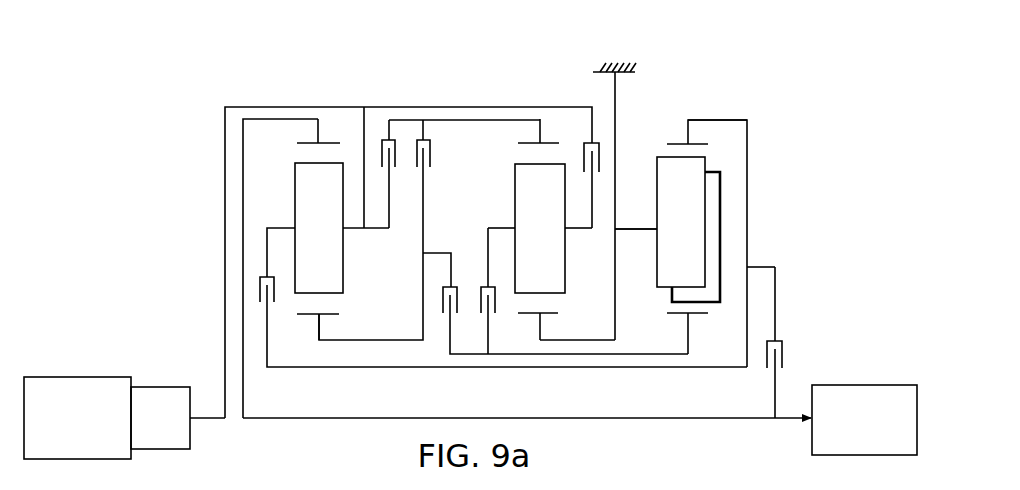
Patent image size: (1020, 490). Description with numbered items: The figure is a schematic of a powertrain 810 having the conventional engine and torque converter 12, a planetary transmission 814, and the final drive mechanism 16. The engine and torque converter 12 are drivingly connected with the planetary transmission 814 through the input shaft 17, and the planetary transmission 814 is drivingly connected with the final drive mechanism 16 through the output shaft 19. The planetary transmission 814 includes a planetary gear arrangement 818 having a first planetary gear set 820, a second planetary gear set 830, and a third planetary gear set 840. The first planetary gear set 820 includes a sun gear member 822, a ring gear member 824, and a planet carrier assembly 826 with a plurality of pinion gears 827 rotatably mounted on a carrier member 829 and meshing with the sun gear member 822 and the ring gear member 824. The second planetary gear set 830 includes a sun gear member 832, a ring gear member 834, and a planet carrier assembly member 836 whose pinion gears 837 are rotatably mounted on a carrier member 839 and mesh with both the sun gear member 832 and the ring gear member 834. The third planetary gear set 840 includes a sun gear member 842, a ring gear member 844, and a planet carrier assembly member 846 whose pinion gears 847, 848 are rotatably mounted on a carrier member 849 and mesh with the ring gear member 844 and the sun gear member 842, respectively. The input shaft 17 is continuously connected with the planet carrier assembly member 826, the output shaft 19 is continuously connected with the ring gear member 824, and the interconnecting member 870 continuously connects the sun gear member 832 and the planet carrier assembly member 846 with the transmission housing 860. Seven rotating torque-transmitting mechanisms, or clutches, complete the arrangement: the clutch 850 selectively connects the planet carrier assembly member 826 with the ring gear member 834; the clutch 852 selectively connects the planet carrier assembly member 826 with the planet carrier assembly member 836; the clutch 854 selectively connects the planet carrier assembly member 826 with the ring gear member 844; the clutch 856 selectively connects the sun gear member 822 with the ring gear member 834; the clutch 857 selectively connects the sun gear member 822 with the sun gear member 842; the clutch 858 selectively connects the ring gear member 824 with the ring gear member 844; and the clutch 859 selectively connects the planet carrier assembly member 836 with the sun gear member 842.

The engine and torque converter 12 is at (97, 361).
The final drive mechanism 16 is at (851, 366).
The input shaft 17 is at (211, 420).
The output shaft 19 is at (780, 420).
The powertrain 810 is at (128, 130).
The planetary transmission 814 is at (720, 88).
The planetary gear arrangement 818 is at (796, 88).
The first planetary gear set 820 is at (305, 317).
The sun gear member 822 is at (328, 316).
The ring gear member 824 is at (310, 143).
The planet carrier assembly 826 is at (283, 221).
The pinion gears 827 is at (319, 228).
The carrier member 829 is at (268, 226).
The second planetary gear set 830 is at (528, 317).
The sun gear member 832 is at (552, 315).
The ring gear member 834 is at (528, 143).
The planet carrier assembly member 836 is at (509, 219).
The pinion gears 837 is at (540, 228).
The carrier member 839 is at (493, 226).
The third planetary gear set 840 is at (680, 318).
The sun gear member 842 is at (703, 316).
The ring gear member 844 is at (682, 143).
The planet carrier assembly member 846 is at (645, 236).
The pinion gears 847 is at (681, 222).
The pinion gears 848 is at (722, 192).
The carrier member 849 is at (633, 227).
The clutch 850 is at (396, 138).
The clutch 852 is at (578, 141).
The clutch 854 is at (258, 272).
The clutch 856 is at (436, 138).
The clutch 857 is at (438, 318).
The clutch 858 is at (786, 337).
The clutch 859 is at (478, 318).
The transmission housing 860 is at (601, 72).
The interconnecting member 870 is at (590, 341).